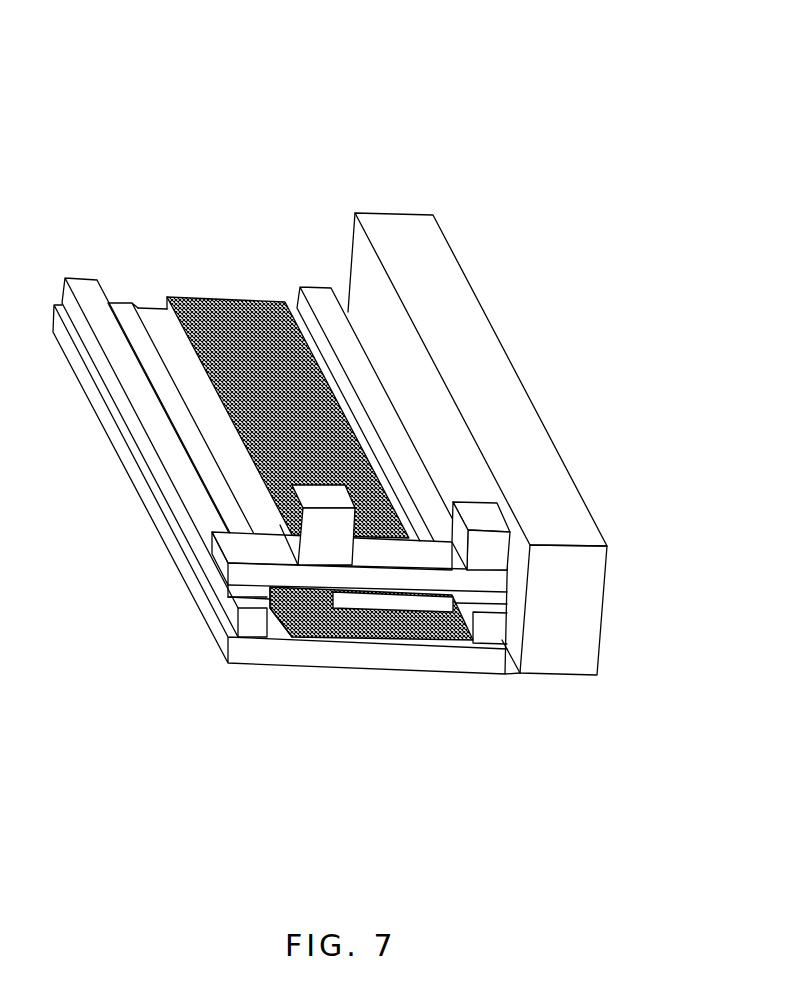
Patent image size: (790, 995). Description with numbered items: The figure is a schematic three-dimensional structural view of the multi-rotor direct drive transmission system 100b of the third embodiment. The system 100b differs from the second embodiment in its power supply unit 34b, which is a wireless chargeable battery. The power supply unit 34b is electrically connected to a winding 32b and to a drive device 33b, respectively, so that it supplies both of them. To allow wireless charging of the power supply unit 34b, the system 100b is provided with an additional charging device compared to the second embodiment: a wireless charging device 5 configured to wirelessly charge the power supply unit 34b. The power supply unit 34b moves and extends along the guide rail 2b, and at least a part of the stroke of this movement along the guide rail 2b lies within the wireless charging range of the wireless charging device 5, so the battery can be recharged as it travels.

The multi-rotor direct drive transmission system 100b is at (335, 45).
The guide rail 2b is at (360, 357).
The wireless charging device 5 is at (512, 398).
The winding 32b is at (400, 603).
The drive device 33b is at (322, 557).
The power supply unit 34b is at (480, 520).